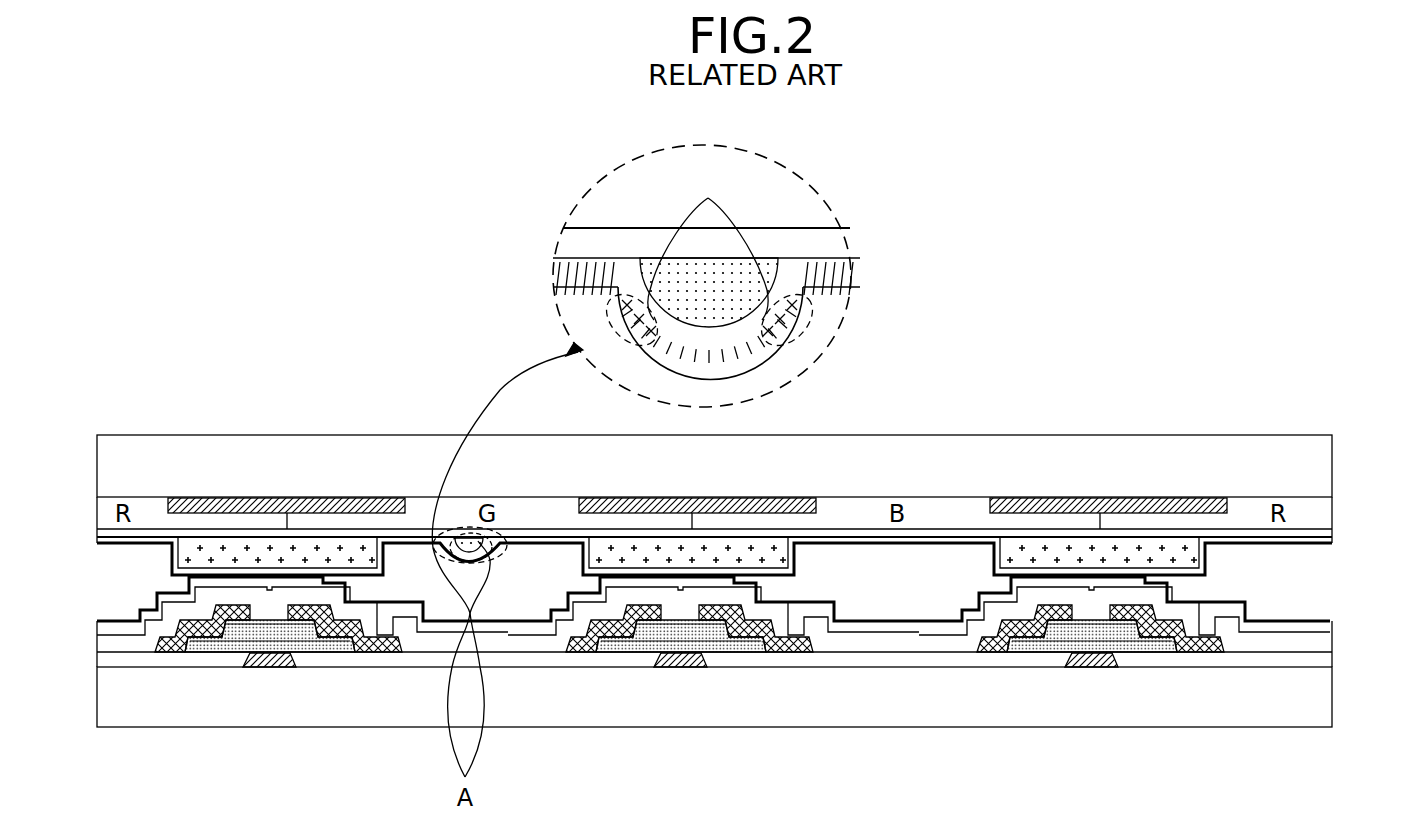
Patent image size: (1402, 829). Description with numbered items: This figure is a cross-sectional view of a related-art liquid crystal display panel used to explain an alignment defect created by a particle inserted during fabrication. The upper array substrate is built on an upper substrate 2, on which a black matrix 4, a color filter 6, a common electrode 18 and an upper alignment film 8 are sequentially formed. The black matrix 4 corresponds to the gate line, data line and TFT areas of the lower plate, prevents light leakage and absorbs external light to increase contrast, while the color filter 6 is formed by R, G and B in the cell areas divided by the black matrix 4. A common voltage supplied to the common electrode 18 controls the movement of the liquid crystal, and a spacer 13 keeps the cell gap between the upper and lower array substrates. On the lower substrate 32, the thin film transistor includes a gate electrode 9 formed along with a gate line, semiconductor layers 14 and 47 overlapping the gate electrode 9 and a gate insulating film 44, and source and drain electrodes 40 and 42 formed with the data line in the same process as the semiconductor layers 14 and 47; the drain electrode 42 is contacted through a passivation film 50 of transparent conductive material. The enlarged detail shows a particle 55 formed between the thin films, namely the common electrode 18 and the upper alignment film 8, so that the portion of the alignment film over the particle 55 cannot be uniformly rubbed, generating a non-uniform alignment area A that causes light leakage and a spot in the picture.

The upper substrate 2 is at (1332, 460).
The black matrix 4 is at (1073, 505).
The color filter 6 is at (1332, 509).
The common electrode 18 is at (1332, 537).
The upper alignment film 8 is at (1332, 545).
The spacer 13 is at (1200, 560).
The lower substrate 32 is at (1332, 695).
The gate insulating film 44 is at (545, 658).
The gate electrode 9 is at (277, 668).
The semiconductor layer 14 is at (197, 650).
The source electrode 40 is at (233, 642).
The semiconductor layer 47 is at (323, 652).
The drain electrode 42 is at (342, 640).
The passivation film 50 is at (422, 645).
The particle 55 is at (467, 537).